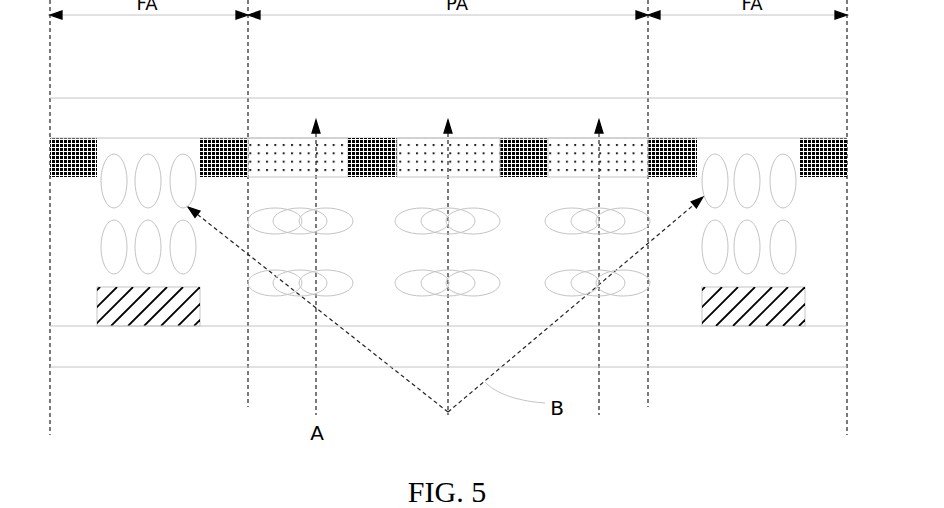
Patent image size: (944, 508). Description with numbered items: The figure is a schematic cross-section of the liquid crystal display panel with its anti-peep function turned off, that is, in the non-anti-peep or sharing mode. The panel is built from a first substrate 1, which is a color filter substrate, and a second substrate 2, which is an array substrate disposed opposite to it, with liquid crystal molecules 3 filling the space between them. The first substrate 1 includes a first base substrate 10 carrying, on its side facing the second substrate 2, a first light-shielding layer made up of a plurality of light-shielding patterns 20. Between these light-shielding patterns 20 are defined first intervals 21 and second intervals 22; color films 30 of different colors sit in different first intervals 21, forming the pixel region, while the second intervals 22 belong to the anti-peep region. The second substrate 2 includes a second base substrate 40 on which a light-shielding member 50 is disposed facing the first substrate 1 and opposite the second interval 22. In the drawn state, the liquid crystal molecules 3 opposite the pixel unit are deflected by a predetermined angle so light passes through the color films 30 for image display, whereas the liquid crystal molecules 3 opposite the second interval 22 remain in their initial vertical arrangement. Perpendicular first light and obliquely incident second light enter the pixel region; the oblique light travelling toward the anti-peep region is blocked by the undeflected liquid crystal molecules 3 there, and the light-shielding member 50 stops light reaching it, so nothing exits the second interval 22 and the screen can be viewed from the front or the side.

The first substrate 1 is at (448, 104).
The first base substrate 10 is at (296, 125).
The light-shielding patterns 20 is at (380, 140).
The color films 30 is at (467, 153).
The first interval 21 is at (582, 147).
The second interval 22 is at (740, 142).
The liquid crystal molecules 3 is at (713, 170).
The second substrate 2 is at (448, 361).
The second base substrate 40 is at (817, 340).
The light-shielding member 50 is at (745, 312).